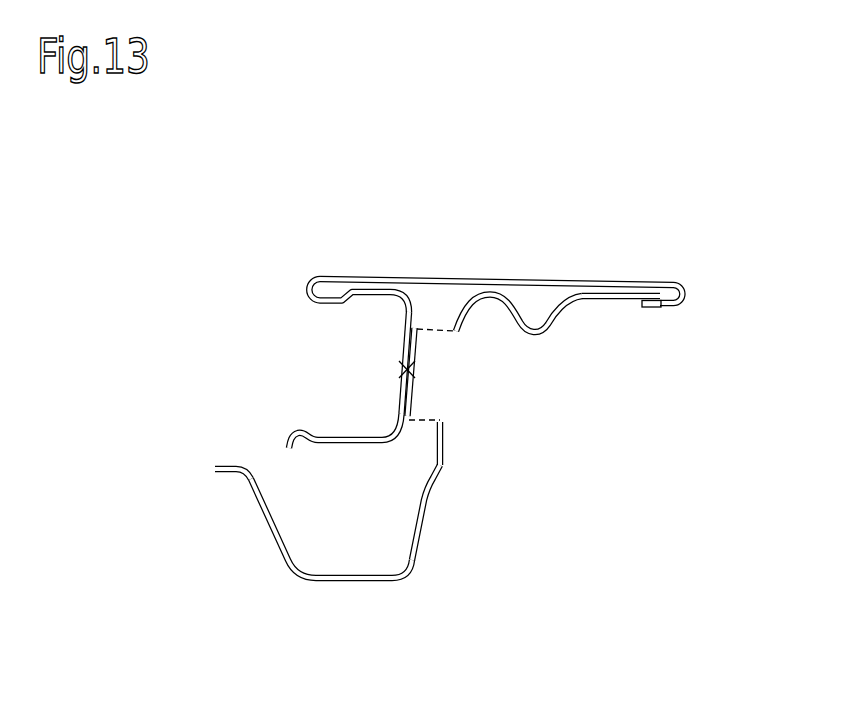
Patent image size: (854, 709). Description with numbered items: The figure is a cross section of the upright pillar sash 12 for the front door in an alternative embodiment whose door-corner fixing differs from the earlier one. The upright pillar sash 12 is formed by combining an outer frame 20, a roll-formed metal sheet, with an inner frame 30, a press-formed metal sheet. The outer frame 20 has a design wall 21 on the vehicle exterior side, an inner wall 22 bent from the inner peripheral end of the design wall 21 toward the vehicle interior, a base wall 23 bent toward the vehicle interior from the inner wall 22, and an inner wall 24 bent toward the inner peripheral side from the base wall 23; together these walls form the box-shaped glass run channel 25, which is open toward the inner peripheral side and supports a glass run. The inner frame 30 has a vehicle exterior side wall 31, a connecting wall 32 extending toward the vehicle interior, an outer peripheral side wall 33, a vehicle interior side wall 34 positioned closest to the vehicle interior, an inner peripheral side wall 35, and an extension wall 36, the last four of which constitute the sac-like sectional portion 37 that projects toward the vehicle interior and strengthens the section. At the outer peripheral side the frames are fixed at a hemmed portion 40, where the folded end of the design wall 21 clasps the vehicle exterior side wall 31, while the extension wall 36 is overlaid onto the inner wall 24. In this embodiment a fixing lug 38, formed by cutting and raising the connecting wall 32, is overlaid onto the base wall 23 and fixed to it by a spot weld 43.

The upright pillar sash 12 is at (514, 293).
The outer frame 20 is at (575, 268).
The design wall 21 is at (524, 279).
The inner wall 22 is at (372, 296).
The base wall 23 is at (413, 320).
The inner wall 24 is at (332, 440).
The glass run channel 25 is at (345, 461).
The inner frame 30 is at (615, 359).
The vehicle exterior side wall 31 is at (628, 298).
The connecting wall 32 is at (446, 424).
The outer peripheral side wall 33 is at (423, 511).
The vehicle interior side wall 34 is at (355, 580).
The inner peripheral side wall 35 is at (268, 520).
The extension wall 36 is at (226, 466).
The sac-like sectional portion 37 is at (457, 512).
The fixing lug 38 is at (413, 400).
The hemmed portion 40 is at (661, 308).
The spot weld 43 is at (404, 370).